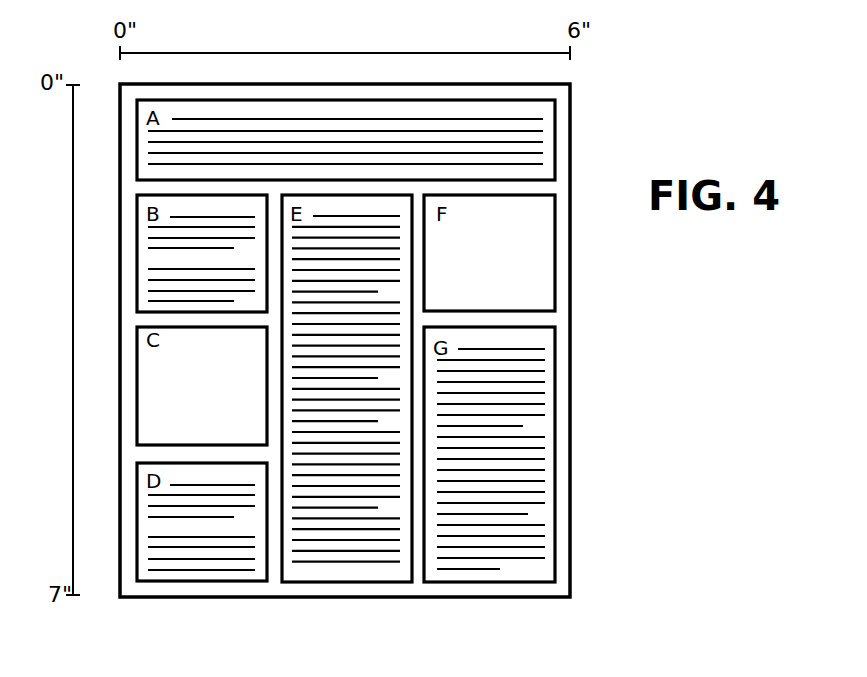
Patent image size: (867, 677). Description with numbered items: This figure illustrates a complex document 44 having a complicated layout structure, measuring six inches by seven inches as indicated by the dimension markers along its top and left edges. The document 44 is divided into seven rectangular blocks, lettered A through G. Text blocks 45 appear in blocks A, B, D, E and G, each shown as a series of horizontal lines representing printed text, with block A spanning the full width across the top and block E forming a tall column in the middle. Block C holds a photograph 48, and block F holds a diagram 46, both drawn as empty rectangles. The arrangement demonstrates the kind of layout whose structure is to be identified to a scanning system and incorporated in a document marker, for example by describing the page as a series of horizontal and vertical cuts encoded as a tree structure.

The document 44 is at (120, 86).
The text blocks 45 is at (153, 233).
The diagram in block F 46 is at (543, 248).
The photograph in block C 48 is at (143, 390).